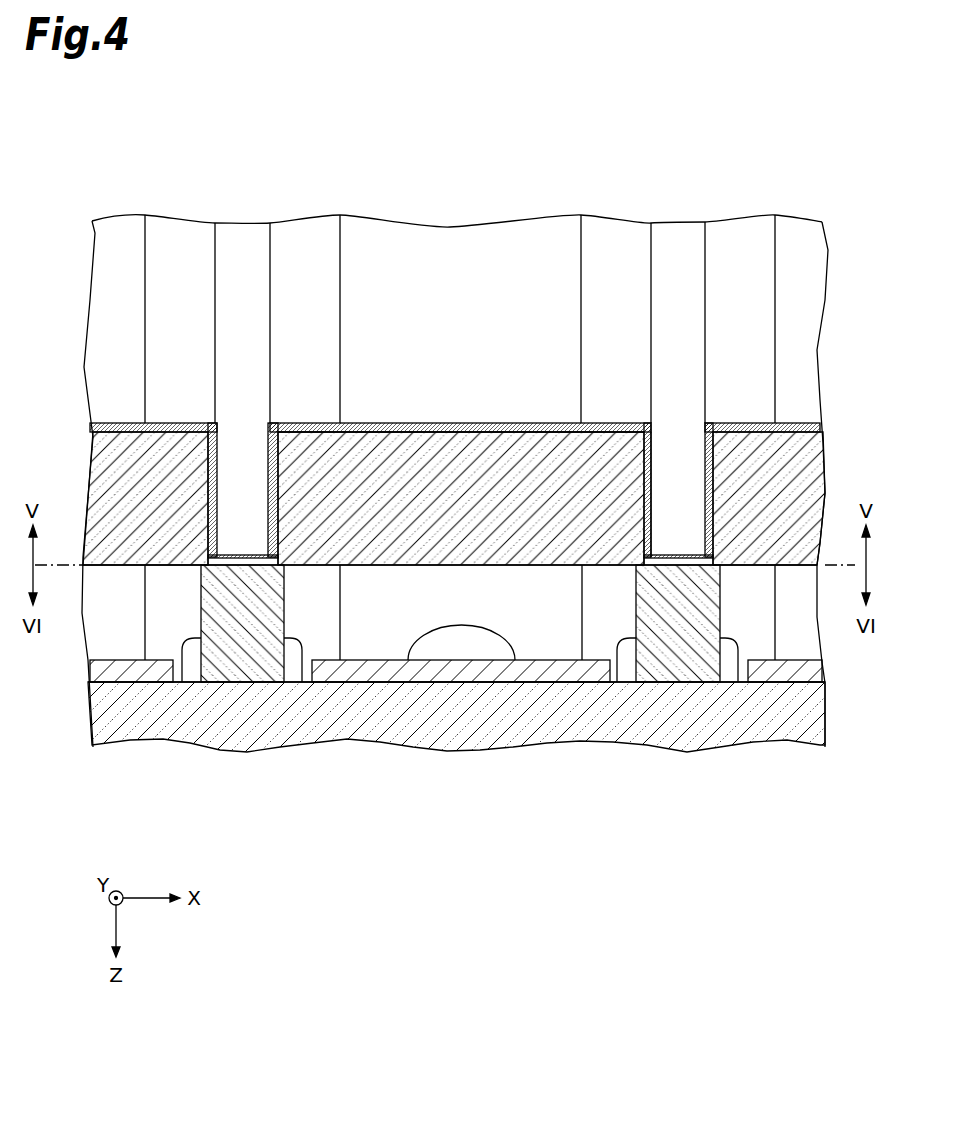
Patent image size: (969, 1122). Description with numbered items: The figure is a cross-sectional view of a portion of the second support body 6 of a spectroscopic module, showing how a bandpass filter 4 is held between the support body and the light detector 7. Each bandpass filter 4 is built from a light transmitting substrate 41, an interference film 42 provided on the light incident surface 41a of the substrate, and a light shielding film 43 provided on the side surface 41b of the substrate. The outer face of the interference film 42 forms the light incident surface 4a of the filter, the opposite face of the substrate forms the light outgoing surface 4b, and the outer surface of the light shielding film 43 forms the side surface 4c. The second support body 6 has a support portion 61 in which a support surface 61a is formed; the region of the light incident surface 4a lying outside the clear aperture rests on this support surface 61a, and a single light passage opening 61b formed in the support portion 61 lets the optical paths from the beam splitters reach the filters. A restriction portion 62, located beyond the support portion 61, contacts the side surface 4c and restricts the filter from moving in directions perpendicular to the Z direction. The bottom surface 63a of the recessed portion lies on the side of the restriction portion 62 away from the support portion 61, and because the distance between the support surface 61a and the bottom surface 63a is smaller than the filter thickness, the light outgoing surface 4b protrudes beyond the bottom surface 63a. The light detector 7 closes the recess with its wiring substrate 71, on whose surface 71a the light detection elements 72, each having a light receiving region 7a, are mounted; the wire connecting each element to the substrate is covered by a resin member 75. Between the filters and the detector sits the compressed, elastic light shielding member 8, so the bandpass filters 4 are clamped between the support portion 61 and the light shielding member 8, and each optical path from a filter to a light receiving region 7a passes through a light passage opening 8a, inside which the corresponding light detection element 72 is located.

The bandpass filter 4 is at (454, 482).
The light incident surface 4a is at (455, 402).
The light outgoing surface 4b is at (461, 565).
The side surface 4c is at (655, 524).
The second support body 6 is at (455, 444).
The support portion 61 is at (300, 240).
The support surface 61a is at (606, 447).
The light passage opening 61b is at (440, 310).
The light transmitting substrate 41 is at (405, 565).
The light incident surface 41a is at (519, 432).
The side surface 41b is at (268, 463).
The interference film 42 is at (401, 423).
The light shielding film 43 is at (657, 449).
The restriction portion 62 is at (242, 530).
The bottom surface 63a is at (660, 662).
The light detector 7 is at (494, 725).
The light receiving region 7a is at (372, 660).
The wiring substrate 71 is at (570, 735).
The surface 71a is at (805, 668).
The light detection element 72 is at (456, 707).
The resin member 75 is at (487, 640).
The light shielding member 8 is at (185, 642).
The light passage opening 8a is at (288, 637).